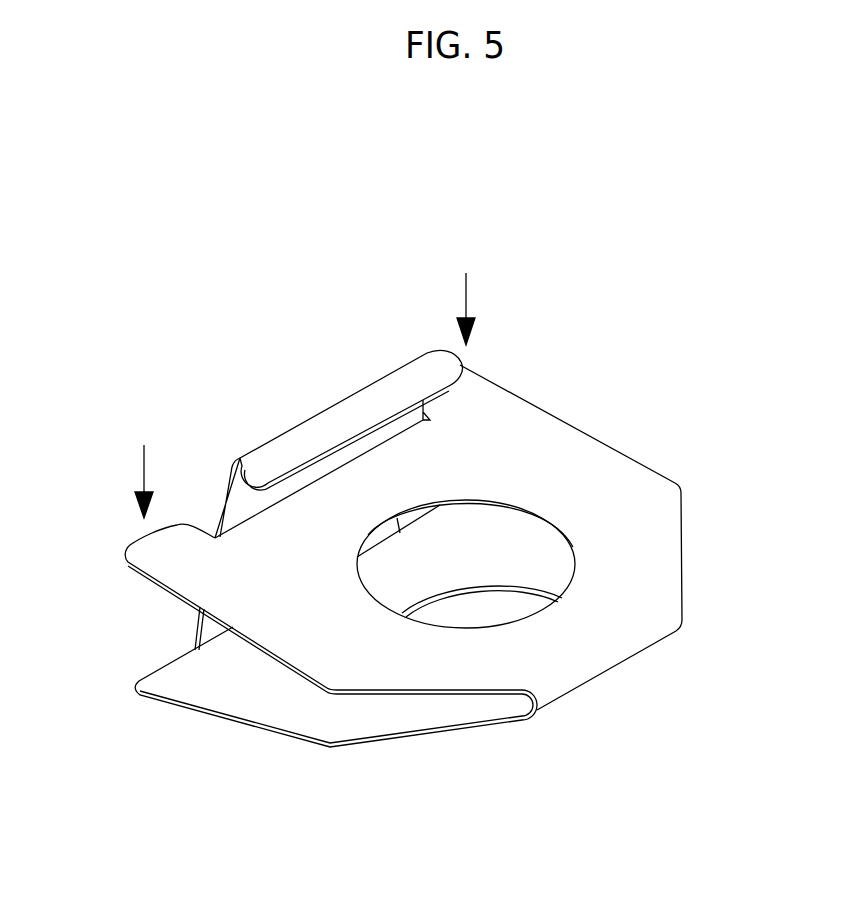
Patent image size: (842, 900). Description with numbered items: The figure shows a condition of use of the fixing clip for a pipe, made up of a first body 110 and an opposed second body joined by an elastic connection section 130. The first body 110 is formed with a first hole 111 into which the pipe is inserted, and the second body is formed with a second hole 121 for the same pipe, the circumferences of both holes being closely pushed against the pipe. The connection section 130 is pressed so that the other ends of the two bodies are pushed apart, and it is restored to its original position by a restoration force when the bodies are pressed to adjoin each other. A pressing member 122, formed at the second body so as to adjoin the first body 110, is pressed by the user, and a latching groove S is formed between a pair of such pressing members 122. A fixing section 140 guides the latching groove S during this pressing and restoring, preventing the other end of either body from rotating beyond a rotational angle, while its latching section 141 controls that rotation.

The first body 110 is at (337, 740).
The first hole 111 is at (490, 607).
The second hole 121 is at (483, 553).
The pressing member 122 is at (487, 388).
The connection section 130 is at (625, 642).
The fixing section 140 is at (193, 628).
The latching section 141 is at (335, 423).
The latching groove S is at (241, 518).